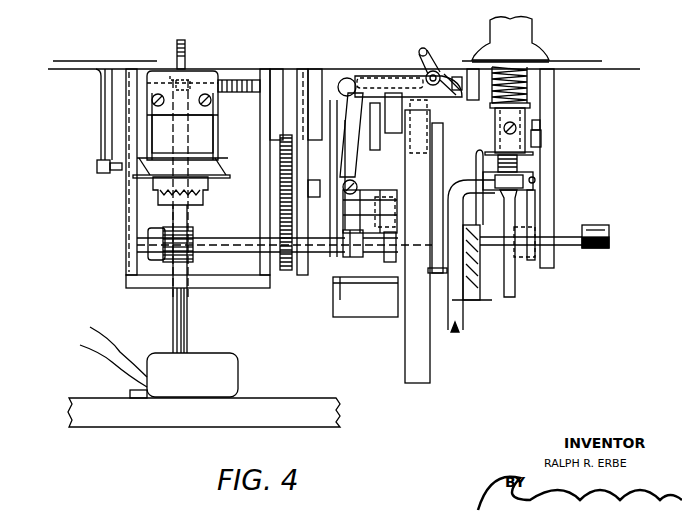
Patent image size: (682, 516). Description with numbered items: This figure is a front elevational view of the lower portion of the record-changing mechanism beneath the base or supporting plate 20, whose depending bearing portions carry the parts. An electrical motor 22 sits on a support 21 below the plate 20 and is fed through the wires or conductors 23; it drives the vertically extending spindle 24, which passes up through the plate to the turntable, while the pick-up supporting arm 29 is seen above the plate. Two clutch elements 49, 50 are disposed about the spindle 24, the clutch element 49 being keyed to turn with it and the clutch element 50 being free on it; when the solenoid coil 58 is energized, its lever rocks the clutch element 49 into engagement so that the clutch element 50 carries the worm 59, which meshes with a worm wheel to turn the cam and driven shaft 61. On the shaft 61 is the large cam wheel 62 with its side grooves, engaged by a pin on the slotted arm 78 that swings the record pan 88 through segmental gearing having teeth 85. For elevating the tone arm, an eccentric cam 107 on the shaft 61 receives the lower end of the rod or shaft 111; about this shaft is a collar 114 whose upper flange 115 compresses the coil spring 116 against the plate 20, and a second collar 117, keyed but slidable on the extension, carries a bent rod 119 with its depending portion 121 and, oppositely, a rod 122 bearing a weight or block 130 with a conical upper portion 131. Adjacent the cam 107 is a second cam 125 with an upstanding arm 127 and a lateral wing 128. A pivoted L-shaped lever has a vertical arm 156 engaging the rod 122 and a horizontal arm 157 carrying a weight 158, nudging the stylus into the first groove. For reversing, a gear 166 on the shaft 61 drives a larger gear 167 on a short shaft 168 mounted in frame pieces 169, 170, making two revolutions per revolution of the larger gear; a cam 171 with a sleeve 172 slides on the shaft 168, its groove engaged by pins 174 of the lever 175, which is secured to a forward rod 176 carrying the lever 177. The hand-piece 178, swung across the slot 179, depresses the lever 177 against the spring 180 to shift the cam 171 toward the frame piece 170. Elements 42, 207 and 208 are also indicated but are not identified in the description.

The base or supporting plate 20 is at (574, 65).
The support 21 is at (102, 418).
The electrical motor 22 is at (202, 372).
The wires or conductors 23 is at (107, 343).
The spindle 24 is at (173, 322).
The pick-up supporting arm 29 is at (519, 27).
The member 42 is at (39, 14).
The clutch element 49 is at (157, 185).
The clutch element 50 is at (157, 200).
The solenoid coil 58 is at (160, 135).
The worm 59 is at (193, 232).
The cam and driven shaft 61 is at (306, 290).
The cam wheel 62 is at (415, 365).
The arm 78 is at (437, 170).
The teeth 85 is at (182, 40).
The record carrying and guiding means or pan 88 is at (132, 6).
The cam 107 is at (515, 285).
The rod or shaft 111 is at (525, 90).
The collar 114 is at (524, 115).
The upper flange 115 is at (529, 105).
The coil spring 116 is at (524, 80).
The second collar 117 is at (549, 173).
The bent rod 119 is at (456, 330).
The depending portion 121 is at (467, 323).
The rod 122 is at (544, 160).
The second cam 125 is at (480, 305).
The upstanding arm 127 is at (478, 167).
The lateral flange or wing 128 is at (470, 305).
The weight or block 130 is at (542, 137).
The conical upper portion 131 is at (540, 128).
The vertical arm 156 is at (527, 213).
The horizontal arm 157 is at (567, 248).
The weight 158 is at (609, 232).
The gear 166 is at (290, 267).
The larger gear 167 is at (283, 160).
The short shaft 168 is at (318, 197).
The frame piece 169 is at (262, 153).
The frame piece 170 is at (303, 113).
The cam 171 is at (337, 220).
The sleeve 172 is at (363, 172).
The pins 174 is at (370, 193).
The lever 175 is at (357, 110).
The rod or shaft 176 is at (347, 79).
The lever 177 is at (397, 88).
The hand-piece 178 is at (427, 55).
The slot 179 is at (343, 160).
The spring 180 is at (390, 90).
The member 207 is at (343, 268).
The box 208 is at (373, 303).